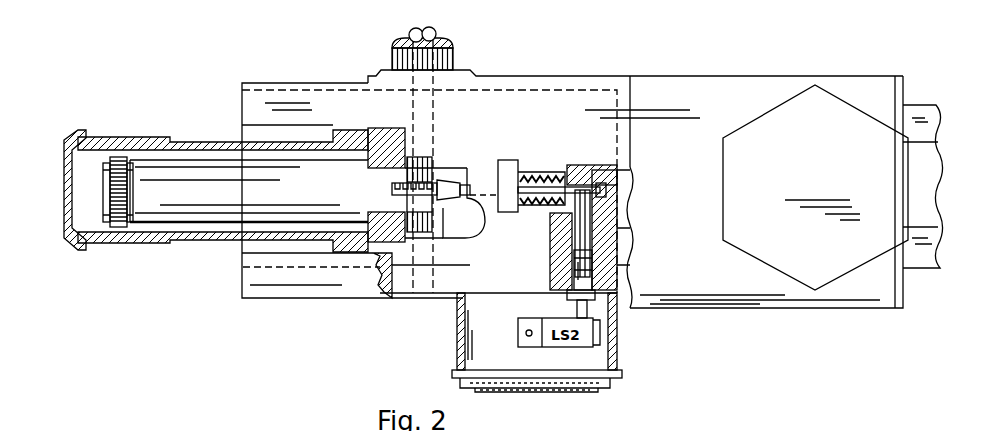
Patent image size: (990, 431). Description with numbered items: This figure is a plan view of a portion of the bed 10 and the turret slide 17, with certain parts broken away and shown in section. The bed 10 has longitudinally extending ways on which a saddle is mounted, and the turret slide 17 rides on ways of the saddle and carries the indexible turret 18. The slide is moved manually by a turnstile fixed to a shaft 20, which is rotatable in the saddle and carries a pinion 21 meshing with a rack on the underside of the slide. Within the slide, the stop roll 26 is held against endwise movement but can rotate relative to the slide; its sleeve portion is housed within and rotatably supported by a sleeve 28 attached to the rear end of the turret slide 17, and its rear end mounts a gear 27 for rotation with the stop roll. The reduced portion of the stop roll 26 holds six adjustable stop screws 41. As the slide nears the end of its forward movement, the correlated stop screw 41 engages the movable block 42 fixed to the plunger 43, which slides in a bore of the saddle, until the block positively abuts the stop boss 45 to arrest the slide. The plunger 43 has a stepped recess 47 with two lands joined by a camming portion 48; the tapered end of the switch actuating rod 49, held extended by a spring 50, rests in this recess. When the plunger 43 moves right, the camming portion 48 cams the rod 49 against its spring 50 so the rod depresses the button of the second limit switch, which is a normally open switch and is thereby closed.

The bed 10 is at (925, 192).
The turret slide 17 is at (716, 303).
The indexible turret 18 is at (815, 187).
The shaft 20 is at (437, 33).
The pinion 21 is at (445, 221).
The stop roll 26 is at (249, 191).
The gear 27 is at (140, 198).
The sleeve 28 is at (226, 240).
The stop screws 41 is at (360, 185).
The movable block 42 is at (458, 180).
The plunger 43 is at (566, 172).
The stop boss 45 is at (446, 180).
The stepped recess 47 is at (620, 167).
The camming portion 48 is at (598, 172).
The switch actuating rod 49 is at (588, 213).
The spring 50 is at (588, 262).